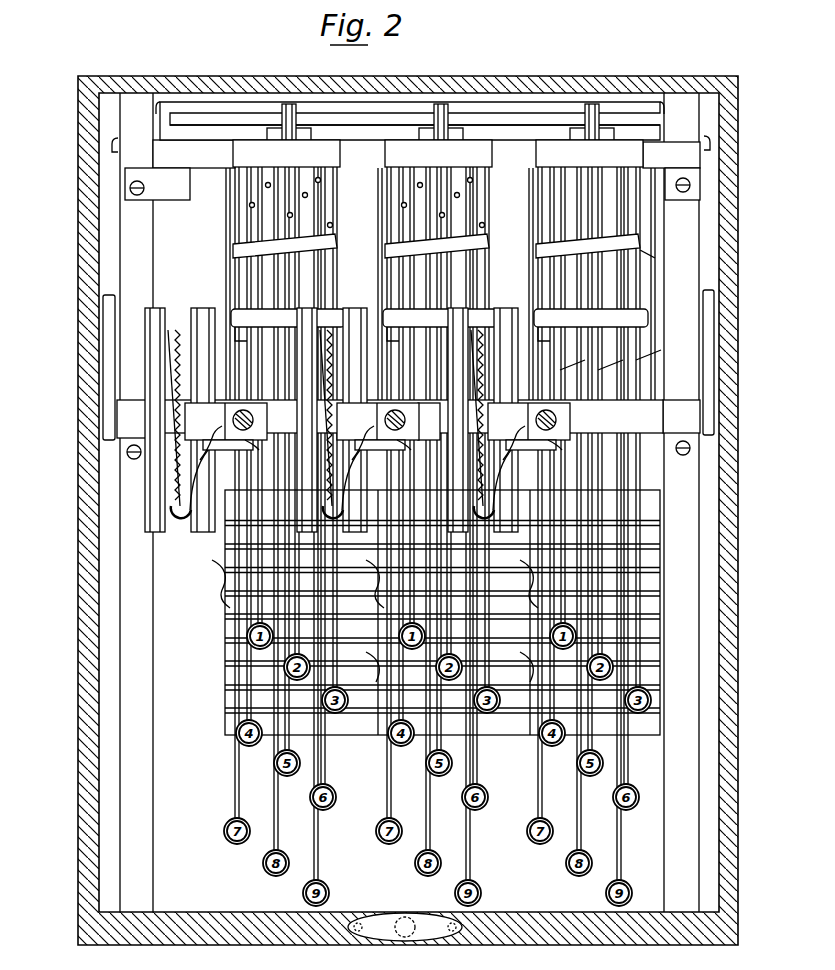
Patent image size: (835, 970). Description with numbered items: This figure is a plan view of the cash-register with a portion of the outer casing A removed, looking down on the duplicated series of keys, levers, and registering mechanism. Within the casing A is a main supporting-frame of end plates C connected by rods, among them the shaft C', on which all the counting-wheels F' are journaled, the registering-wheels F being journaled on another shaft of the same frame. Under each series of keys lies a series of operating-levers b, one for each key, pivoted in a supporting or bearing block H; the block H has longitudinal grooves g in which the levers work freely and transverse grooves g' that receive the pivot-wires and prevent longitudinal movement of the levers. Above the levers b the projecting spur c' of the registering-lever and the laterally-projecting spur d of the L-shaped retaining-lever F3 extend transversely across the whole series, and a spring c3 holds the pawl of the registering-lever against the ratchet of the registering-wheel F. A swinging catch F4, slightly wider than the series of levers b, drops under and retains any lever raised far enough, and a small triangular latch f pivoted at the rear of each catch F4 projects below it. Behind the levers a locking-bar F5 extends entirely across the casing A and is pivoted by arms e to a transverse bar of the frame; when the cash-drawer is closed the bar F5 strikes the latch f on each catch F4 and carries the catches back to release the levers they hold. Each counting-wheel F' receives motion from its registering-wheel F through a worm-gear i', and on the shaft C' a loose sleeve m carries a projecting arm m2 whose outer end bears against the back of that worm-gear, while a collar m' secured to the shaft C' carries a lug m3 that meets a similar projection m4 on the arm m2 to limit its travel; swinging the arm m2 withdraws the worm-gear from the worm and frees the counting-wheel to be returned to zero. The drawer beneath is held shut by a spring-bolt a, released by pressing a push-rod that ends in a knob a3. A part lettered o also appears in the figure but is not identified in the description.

The outer casing A is at (395, 510).
The spring-bolt a is at (648, 260).
The knob or handle a3 is at (418, 930).
The operating-levers b is at (256, 792).
The end plates C is at (408, 502).
The rod or shaft C' is at (407, 416).
The projecting spur c' is at (439, 325).
The spring c3 is at (409, 134).
The laterally-projecting spur d is at (499, 226).
The arms e is at (163, 134).
The triangular latch f is at (289, 104).
The registering-wheels F is at (352, 409).
The counting-wheels F' is at (323, 407).
The L-shaped lever F3 is at (224, 256).
The swinging catch F4 is at (438, 153).
The locking-bar F5 is at (492, 102).
The longitudinal grooves g is at (422, 523).
The transverse grooves g' is at (368, 612).
The supporting or bearing block H is at (224, 612).
The worm-gear i' is at (331, 414).
The loose sleeve m is at (377, 426).
The collar m' is at (392, 416).
The projecting arm m2 is at (362, 442).
The projecting lug or spur m3 is at (397, 445).
The projection m4 is at (354, 477).
The slide bar o is at (408, 365).